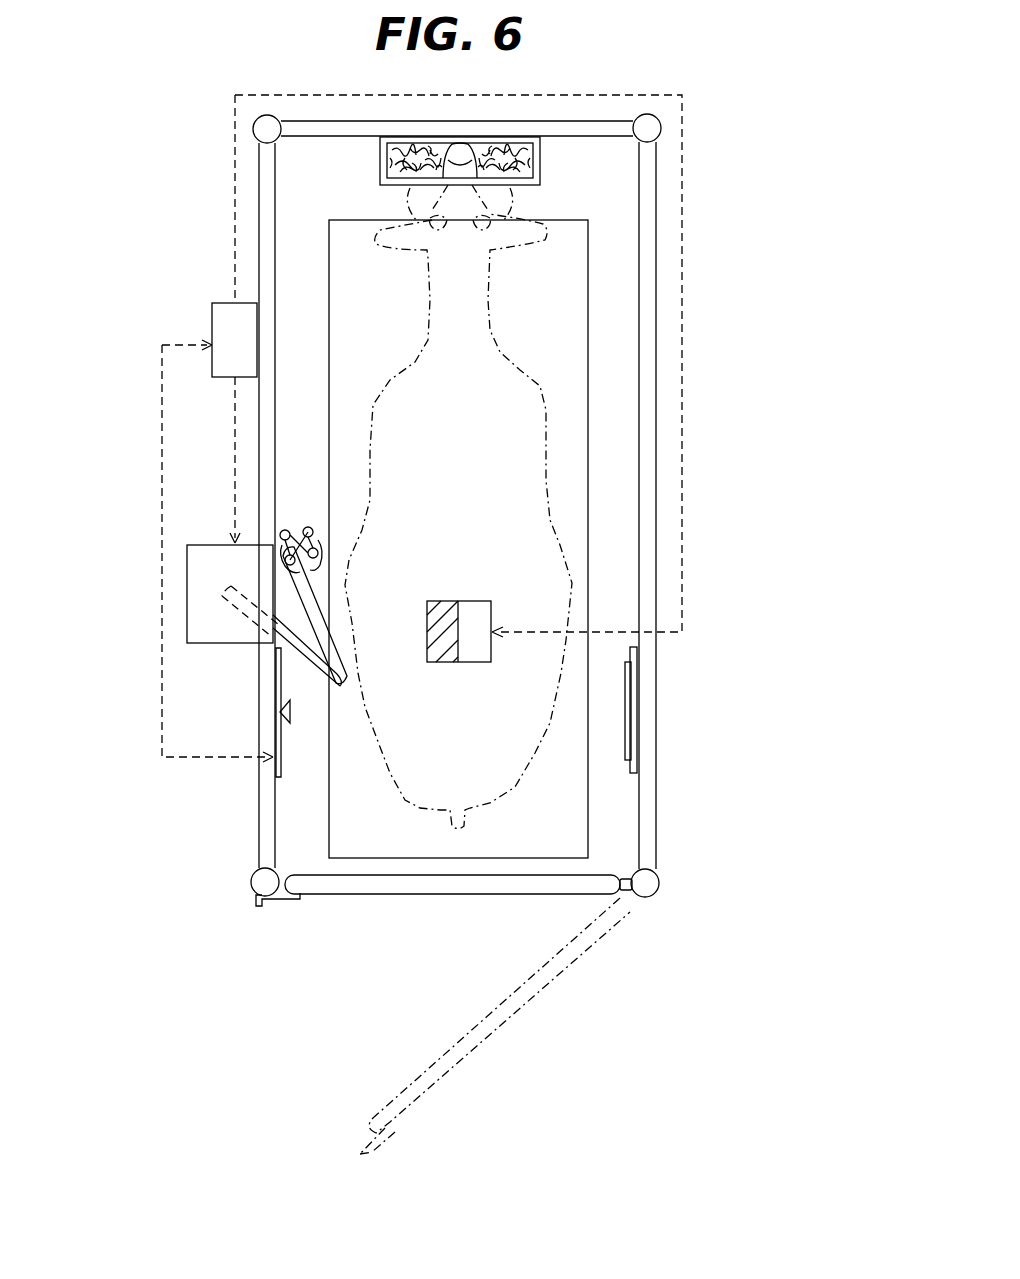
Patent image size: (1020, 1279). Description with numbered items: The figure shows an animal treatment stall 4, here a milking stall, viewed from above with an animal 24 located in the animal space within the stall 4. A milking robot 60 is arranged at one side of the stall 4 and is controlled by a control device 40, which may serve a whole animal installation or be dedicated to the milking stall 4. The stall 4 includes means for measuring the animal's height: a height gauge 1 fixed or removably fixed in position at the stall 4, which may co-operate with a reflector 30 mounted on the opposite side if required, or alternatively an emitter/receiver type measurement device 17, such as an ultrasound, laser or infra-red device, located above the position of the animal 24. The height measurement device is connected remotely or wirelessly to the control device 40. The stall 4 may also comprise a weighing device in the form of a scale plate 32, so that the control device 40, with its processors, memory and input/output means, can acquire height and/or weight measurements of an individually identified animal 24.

The height gauge 1 is at (295, 757).
The animal treatment stall 4 is at (652, 355).
The emitter/receiver type measurement device 17 is at (460, 582).
The animal 24 is at (482, 318).
The reflector 30 is at (617, 744).
The scale plate 32 is at (573, 442).
The control device 40 is at (203, 287).
The milking robot 60 is at (192, 561).